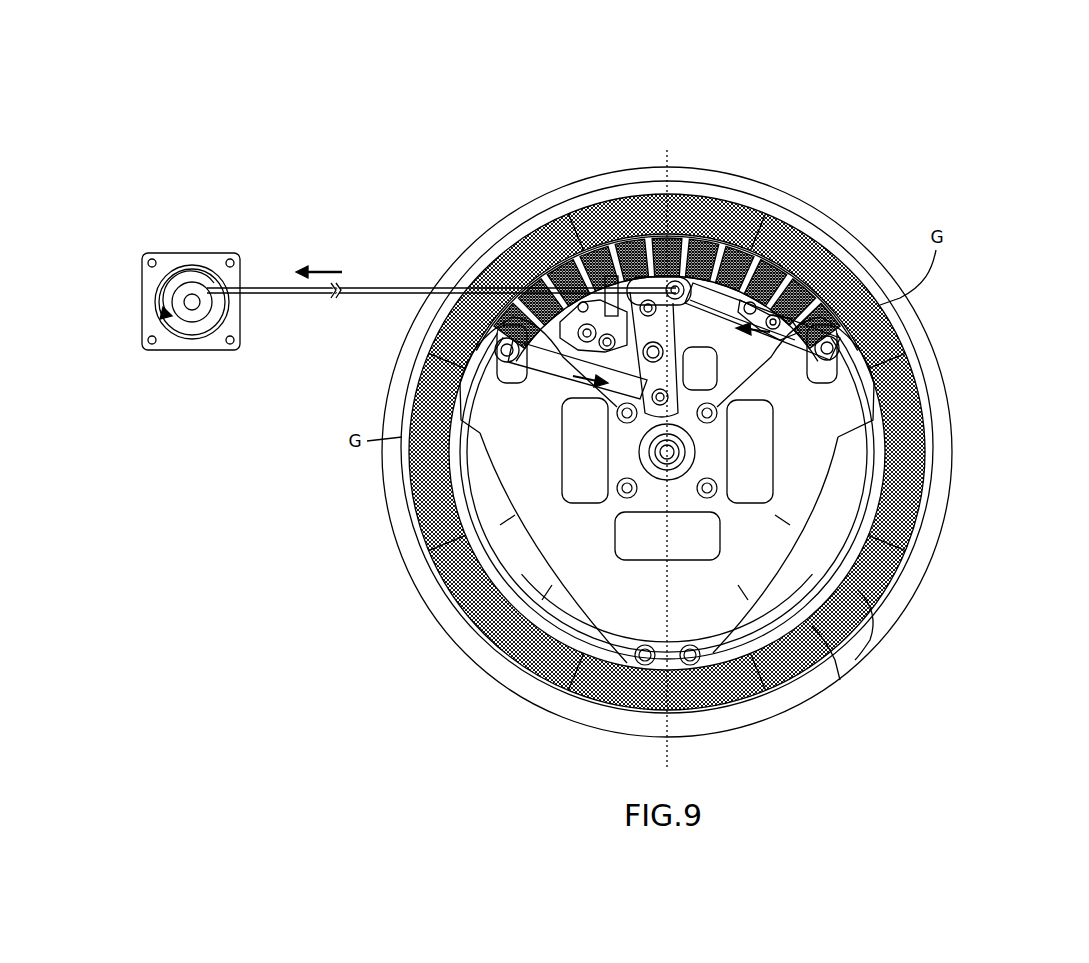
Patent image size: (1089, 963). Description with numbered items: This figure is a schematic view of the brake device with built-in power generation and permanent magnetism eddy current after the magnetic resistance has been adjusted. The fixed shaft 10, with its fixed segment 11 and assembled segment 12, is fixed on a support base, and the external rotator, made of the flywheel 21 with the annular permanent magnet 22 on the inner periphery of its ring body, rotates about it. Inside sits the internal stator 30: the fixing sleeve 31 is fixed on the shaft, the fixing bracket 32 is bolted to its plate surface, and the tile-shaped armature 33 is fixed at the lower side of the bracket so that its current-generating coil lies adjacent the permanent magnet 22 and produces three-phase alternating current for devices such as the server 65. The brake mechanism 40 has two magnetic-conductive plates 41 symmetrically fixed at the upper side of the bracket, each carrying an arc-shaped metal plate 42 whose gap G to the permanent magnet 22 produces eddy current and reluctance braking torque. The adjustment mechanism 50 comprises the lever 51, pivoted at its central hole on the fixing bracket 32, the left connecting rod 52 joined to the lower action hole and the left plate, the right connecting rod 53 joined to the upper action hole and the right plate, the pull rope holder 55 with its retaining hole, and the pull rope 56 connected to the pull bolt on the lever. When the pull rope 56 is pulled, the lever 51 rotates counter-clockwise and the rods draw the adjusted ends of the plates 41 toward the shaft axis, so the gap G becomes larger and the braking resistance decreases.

The fixed shaft 10 is at (725, 452).
The fixed segment 11 is at (858, 542).
The assembled segment 12 is at (690, 442).
The flywheel 21 is at (912, 424).
The permanent magnet 22 is at (922, 362).
The internal stator 30 is at (554, 491).
The fixing sleeve 31 is at (667, 452).
The fixing bracket 32 is at (412, 418).
The tile-shaped armature 33 is at (492, 412).
The brake mechanism 40 is at (874, 690).
The magnetic-conductive plate 41 is at (838, 682).
The arc-shaped metal plate 42 is at (870, 640).
The adjustment mechanism 50 is at (523, 221).
The lever 51 is at (655, 278).
The left connecting rod 52 is at (552, 355).
The right connecting rod 53 is at (726, 330).
The pull rope holder 55 is at (600, 322).
The pull rope 56 is at (390, 288).
The server 65 is at (161, 352).